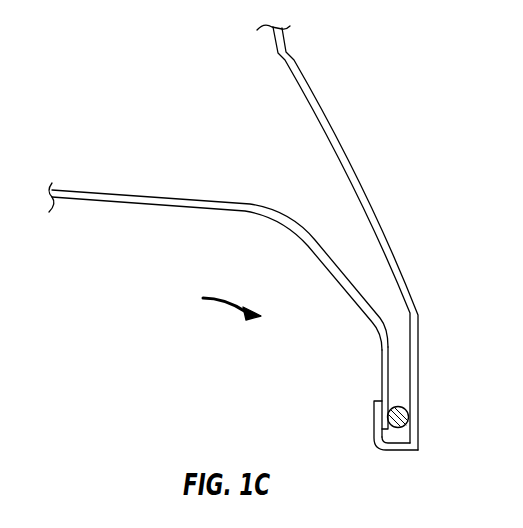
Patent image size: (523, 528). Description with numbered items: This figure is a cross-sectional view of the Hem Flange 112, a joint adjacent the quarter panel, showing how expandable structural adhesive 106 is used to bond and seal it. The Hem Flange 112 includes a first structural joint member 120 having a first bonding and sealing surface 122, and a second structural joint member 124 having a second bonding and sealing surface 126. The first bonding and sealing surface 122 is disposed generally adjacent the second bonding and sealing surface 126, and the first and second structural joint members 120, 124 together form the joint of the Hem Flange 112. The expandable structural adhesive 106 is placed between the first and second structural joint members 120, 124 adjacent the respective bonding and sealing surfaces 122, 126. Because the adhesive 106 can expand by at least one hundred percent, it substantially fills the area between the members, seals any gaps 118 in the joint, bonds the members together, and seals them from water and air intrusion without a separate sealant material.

The expandable structural adhesive 106 is at (406, 412).
The Hem Flange 112 is at (209, 301).
The gaps 118 is at (402, 392).
The first structural joint member 120 is at (393, 252).
The first bonding and sealing surface 122 is at (405, 432).
The second structural joint member 124 is at (318, 255).
The second bonding and sealing surface 126 is at (389, 381).